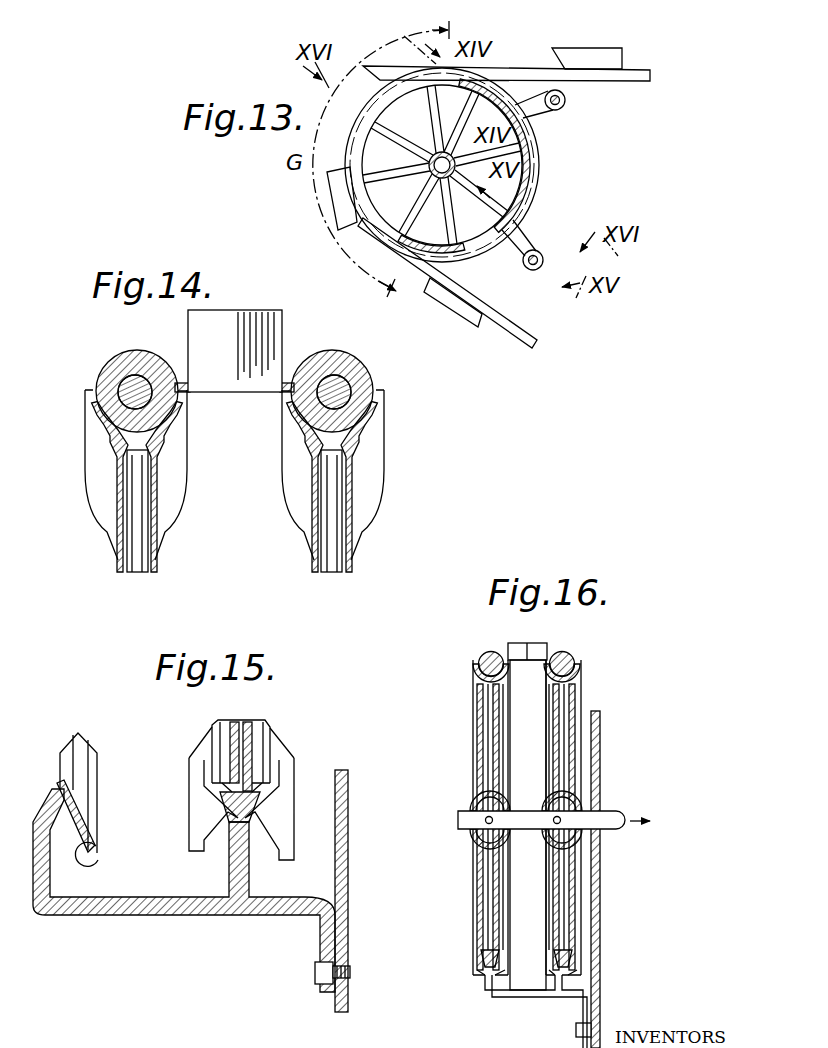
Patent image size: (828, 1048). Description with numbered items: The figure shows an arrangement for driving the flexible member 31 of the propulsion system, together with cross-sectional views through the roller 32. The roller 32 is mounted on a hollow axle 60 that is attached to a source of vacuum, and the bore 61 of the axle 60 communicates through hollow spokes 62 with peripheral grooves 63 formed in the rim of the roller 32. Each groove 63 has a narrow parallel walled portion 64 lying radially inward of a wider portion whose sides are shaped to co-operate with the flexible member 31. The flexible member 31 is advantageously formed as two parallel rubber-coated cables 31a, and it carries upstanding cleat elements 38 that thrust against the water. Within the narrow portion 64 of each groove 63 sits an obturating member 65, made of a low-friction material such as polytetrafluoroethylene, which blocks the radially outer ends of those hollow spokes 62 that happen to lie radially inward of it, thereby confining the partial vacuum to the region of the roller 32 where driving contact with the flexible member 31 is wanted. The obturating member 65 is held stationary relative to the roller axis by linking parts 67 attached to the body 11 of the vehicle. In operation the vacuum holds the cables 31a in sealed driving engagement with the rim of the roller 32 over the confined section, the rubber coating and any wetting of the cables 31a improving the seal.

In FIG. 15, the body 11 is at (346, 800).
In FIG. 16, the body 11 is at (600, 768).
In FIG. 13, the flexible member 31 is at (585, 84).
In FIG. 14, the rubber-coated cables 31a is at (120, 350).
In FIG. 16, the rubber-coated cables 31a is at (500, 654).
In FIG. 13, the roller 32 is at (528, 226).
In FIG. 15, the roller 32 is at (301, 803).
In FIG. 16, the roller 32 is at (466, 732).
In FIG. 13, the cleat elements 38 is at (582, 70).
In FIG. 14, the cleat elements 38 is at (228, 322).
In FIG. 16, the cleat elements 38 is at (541, 655).
In FIG. 13, the hollow axle 60 is at (428, 160).
In FIG. 16, the hollow axle 60 is at (607, 812).
In FIG. 13, the bore 61 is at (441, 185).
In FIG. 13, the hollow spokes 62 is at (443, 111).
In FIG. 14, the hollow spokes 62 is at (120, 560).
In FIG. 15, the hollow spokes 62 is at (67, 763).
In FIG. 16, the hollow spokes 62 is at (574, 705).
In FIG. 13, the peripheral grooves 63 is at (536, 153).
In FIG. 14, the peripheral grooves 63 is at (100, 402).
In FIG. 15, the peripheral grooves 63 is at (78, 854).
In FIG. 16, the peripheral grooves 63 is at (478, 983).
In FIG. 13, the narrow parallel walled portion 64 is at (375, 211).
In FIG. 14, the narrow parallel walled portion 64 is at (118, 446).
In FIG. 16, the narrow parallel walled portion 64 is at (571, 678).
In FIG. 13, the obturating member 65 is at (528, 183).
In FIG. 15, the obturating member 65 is at (52, 810).
In FIG. 16, the obturating member 65 is at (567, 960).
In FIG. 13, the linking parts 67 is at (545, 116).
In FIG. 15, the linking parts 67 is at (216, 908).
In FIG. 16, the linking parts 67 is at (532, 997).